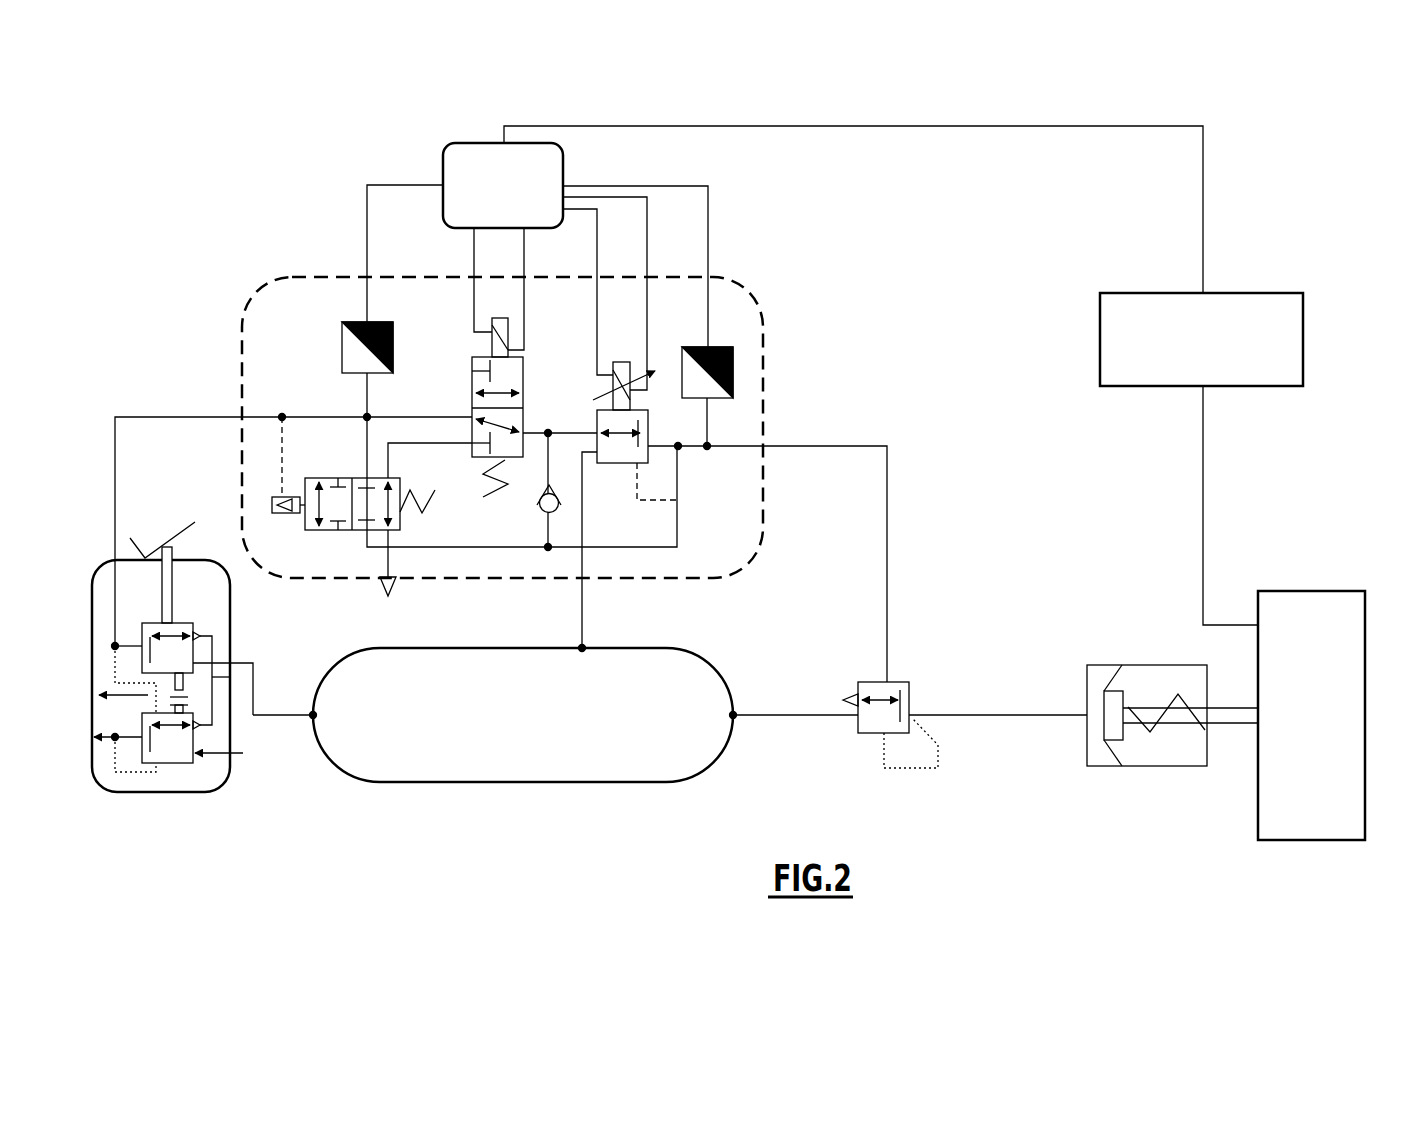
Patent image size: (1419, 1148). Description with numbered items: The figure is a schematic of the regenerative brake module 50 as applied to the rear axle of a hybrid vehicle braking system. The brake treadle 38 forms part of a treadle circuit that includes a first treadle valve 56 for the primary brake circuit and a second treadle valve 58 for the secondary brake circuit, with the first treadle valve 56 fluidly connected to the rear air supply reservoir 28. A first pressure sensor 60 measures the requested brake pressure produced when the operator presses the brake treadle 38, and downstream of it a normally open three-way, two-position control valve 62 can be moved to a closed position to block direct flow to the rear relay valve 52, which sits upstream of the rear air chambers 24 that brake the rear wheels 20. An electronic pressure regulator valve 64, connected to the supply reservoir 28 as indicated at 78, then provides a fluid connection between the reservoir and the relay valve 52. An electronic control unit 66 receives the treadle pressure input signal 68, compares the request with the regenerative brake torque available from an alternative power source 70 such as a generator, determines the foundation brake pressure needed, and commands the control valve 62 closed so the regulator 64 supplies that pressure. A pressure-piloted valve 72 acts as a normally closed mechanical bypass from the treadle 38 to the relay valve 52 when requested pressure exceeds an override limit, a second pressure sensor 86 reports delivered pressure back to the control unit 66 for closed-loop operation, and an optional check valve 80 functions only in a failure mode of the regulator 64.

The rear wheels 20 is at (1338, 755).
The rear air chambers 24 is at (1147, 665).
The rear air supply reservoir 28 is at (577, 762).
The brake treadle 38 is at (190, 526).
The regenerative brake module 50 is at (207, 214).
The rear relay valve 52 is at (900, 682).
The first treadle valve 56 is at (187, 622).
The second treadle valve 58 is at (190, 764).
The first pressure sensor 60 is at (342, 352).
The 3/2 valve 62 is at (523, 378).
The electronic pressure regulator valve 64 is at (617, 465).
The electronic control unit 66 is at (443, 150).
The treadle pressure input signal 68 is at (367, 232).
The alternative power source 70 is at (1218, 357).
The pressure-piloted valve 72 is at (330, 531).
The connection to supply reservoir 78 is at (583, 612).
The check valve 80 is at (518, 500).
The second pressure sensor 86 is at (733, 372).